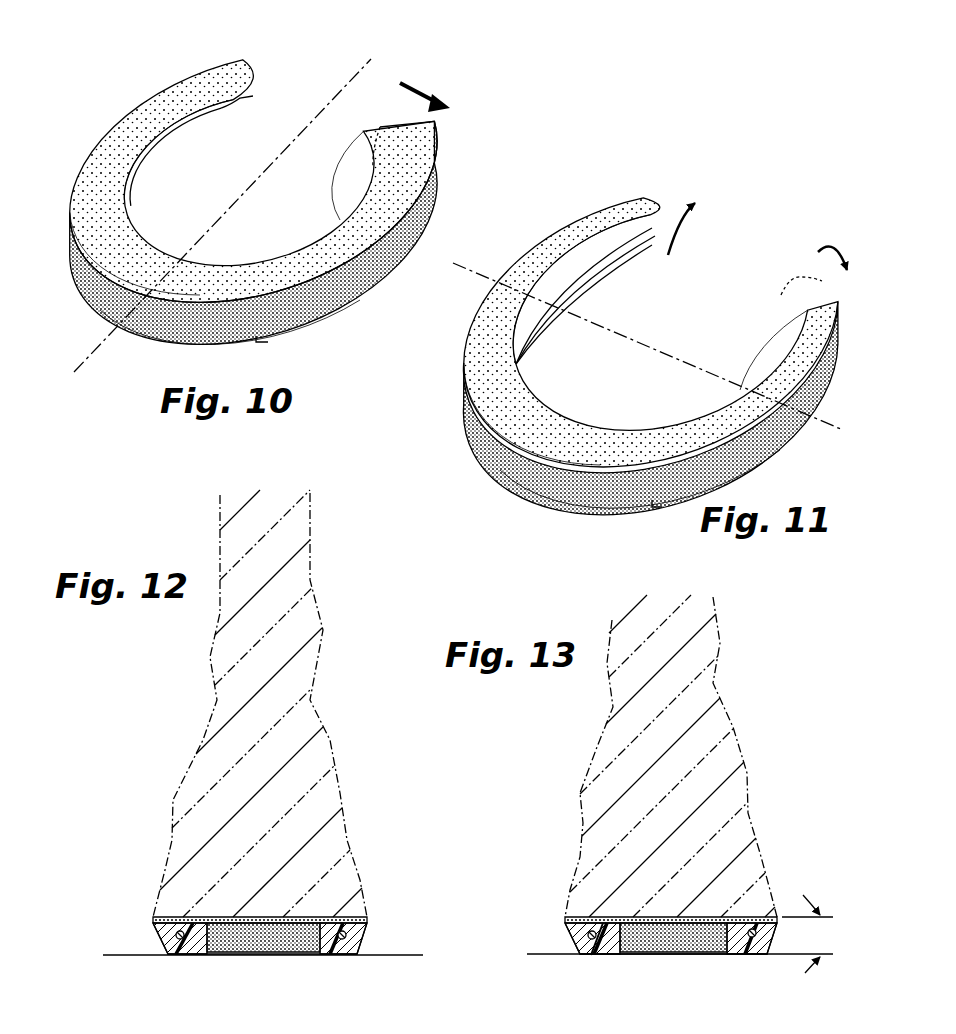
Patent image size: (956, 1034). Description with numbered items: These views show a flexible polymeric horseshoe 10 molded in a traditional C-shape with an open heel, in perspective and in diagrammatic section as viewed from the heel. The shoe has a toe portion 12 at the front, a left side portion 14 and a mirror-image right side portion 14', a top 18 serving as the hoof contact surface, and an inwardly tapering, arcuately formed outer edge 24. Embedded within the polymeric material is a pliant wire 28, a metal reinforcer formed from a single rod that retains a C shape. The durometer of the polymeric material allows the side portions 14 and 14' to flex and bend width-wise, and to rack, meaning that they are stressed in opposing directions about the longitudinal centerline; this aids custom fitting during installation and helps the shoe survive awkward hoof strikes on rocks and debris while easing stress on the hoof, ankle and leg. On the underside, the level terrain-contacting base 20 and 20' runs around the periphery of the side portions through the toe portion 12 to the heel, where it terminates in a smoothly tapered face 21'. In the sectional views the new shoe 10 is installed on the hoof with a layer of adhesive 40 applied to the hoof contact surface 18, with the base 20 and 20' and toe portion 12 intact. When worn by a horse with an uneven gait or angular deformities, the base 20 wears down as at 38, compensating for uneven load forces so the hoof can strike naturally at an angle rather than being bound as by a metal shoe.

In FIG. 10, the horseshoe 10 is at (146, 73).
In FIG. 11, the horseshoe 10 is at (560, 185).
In FIG. 12, the horseshoe 10 is at (130, 908).
In FIG. 13, the horseshoe 10 is at (547, 918).
In FIG. 12, the toe portion 12 is at (250, 958).
In FIG. 13, the toe portion 12 is at (680, 958).
In FIG. 10, the left side portion 14 is at (378, 171).
In FIG. 11, the left side portion 14 is at (768, 333).
In FIG. 10, the right side portion 14' is at (178, 153).
In FIG. 11, the right side portion 14' is at (584, 303).
In FIG. 10, the top 18 is at (108, 150).
In FIG. 11, the top 18 is at (492, 375).
In FIG. 12, the base 20 is at (158, 955).
In FIG. 13, the base 20 is at (566, 955).
In FIG. 12, the base 20' is at (350, 958).
In FIG. 13, the base 20' is at (755, 961).
In FIG. 10, the smoothly tapered face 21' is at (259, 98).
In FIG. 10, the outer edge 24 is at (340, 315).
In FIG. 11, the outer edge 24 is at (774, 441).
In FIG. 12, the pliant wire 28 is at (360, 938).
In FIG. 13, the pliant wire 28 is at (568, 933).
In FIG. 13, the worn-down base 38 is at (601, 959).
In FIG. 12, the adhesive 40 is at (367, 917).
In FIG. 13, the adhesive 40 is at (773, 917).